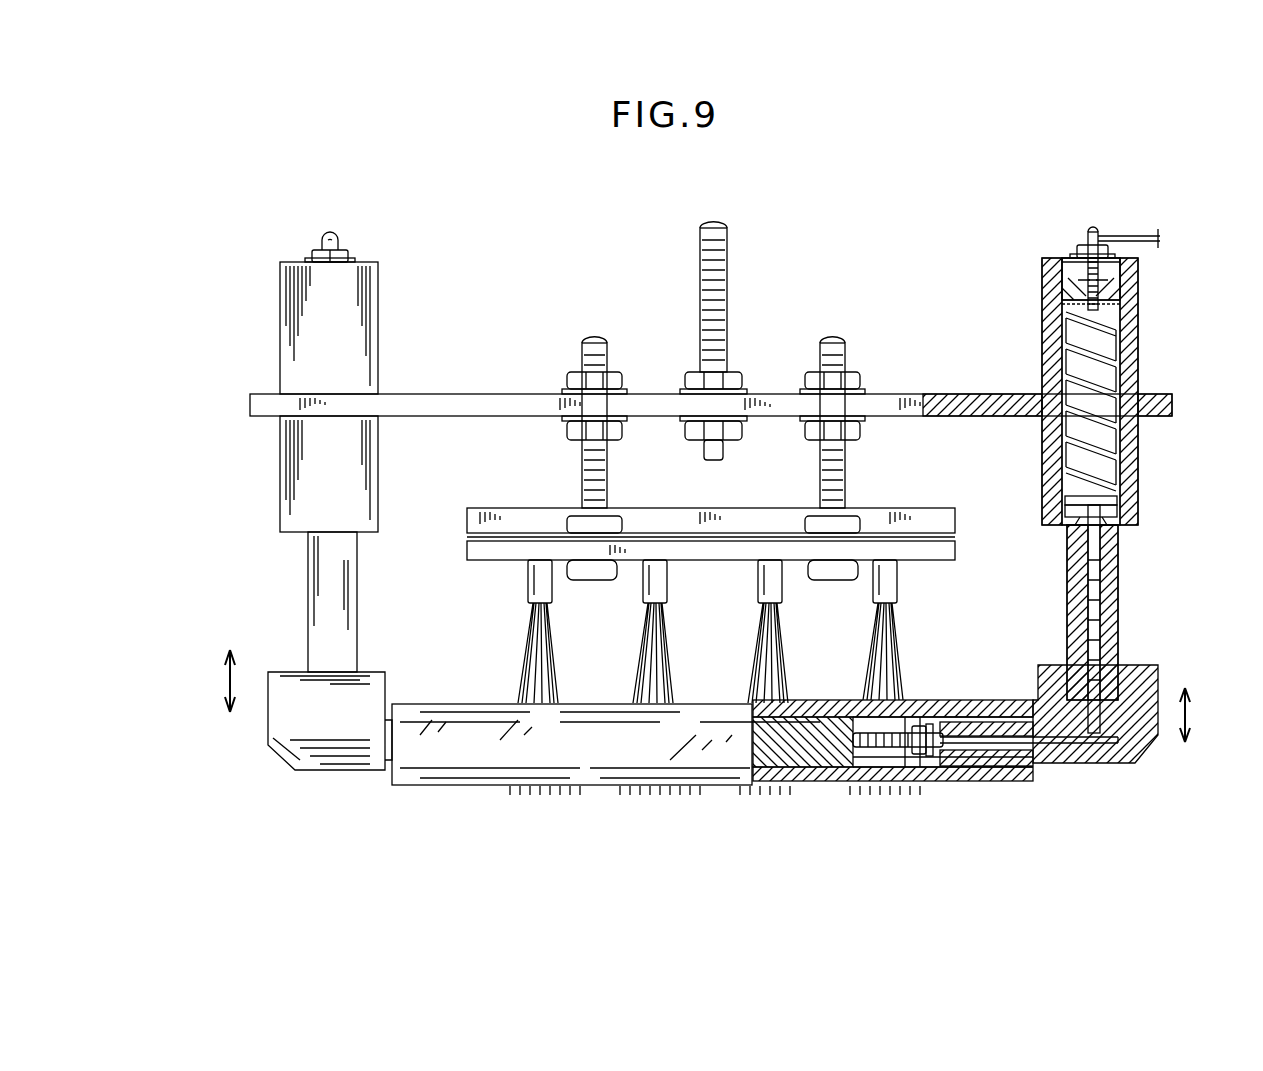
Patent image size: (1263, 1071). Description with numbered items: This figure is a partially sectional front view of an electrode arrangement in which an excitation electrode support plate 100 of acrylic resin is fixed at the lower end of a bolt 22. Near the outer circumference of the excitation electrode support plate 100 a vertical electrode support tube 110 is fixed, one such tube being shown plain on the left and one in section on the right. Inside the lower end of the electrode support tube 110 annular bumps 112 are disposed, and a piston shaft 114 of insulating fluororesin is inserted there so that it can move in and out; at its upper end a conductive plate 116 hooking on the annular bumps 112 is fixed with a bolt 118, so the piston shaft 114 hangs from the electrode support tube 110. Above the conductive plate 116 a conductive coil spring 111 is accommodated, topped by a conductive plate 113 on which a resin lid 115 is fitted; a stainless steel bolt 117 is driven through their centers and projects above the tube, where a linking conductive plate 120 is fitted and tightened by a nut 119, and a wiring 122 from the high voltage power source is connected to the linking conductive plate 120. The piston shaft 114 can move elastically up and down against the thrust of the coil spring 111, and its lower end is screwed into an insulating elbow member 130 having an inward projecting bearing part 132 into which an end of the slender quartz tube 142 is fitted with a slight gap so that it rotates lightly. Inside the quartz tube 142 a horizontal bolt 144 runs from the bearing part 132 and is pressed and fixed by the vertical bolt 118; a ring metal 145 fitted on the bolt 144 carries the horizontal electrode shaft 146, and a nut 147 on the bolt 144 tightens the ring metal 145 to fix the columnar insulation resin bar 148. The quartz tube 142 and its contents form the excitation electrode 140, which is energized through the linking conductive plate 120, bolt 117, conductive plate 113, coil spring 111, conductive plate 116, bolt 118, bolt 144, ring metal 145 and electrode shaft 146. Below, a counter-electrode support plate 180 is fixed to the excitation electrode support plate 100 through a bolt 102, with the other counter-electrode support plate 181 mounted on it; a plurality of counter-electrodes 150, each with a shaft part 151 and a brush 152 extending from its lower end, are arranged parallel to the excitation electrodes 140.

The bolt 22 is at (728, 286).
The excitation electrode support plate 100 is at (934, 393).
The bolt 102 is at (582, 480).
The electrode support tube 110 is at (316, 352).
The coil spring 111 is at (1092, 432).
The annular bumps 112 is at (1110, 530).
The conductive plate 113 is at (1126, 306).
The piston shaft 114 is at (326, 598).
The lid 115 is at (1062, 260).
The conductive plate 116 is at (1118, 500).
The bolt 117 is at (338, 243).
The bolt 118 is at (1098, 600).
The nut 119 is at (326, 250).
The linking conductive plate 120 is at (312, 258).
The wiring 122 is at (1130, 236).
The elbow member 130 is at (300, 736).
The bearing part 132 is at (1010, 786).
The excitation electrode 140 is at (606, 790).
The quartz tube 142 is at (1045, 772).
The bolt 144 is at (958, 766).
The ring metal 145 is at (916, 762).
The electrode shaft 146 is at (776, 786).
The nut 147 is at (925, 705).
The insulation resin bar 148 is at (826, 762).
The counter-electrode 150 is at (652, 647).
The shaft part 151 is at (530, 582).
The brush 152 is at (535, 668).
The counter-electrode support plate 180 is at (936, 556).
The counter-electrode support plate 181 is at (922, 515).